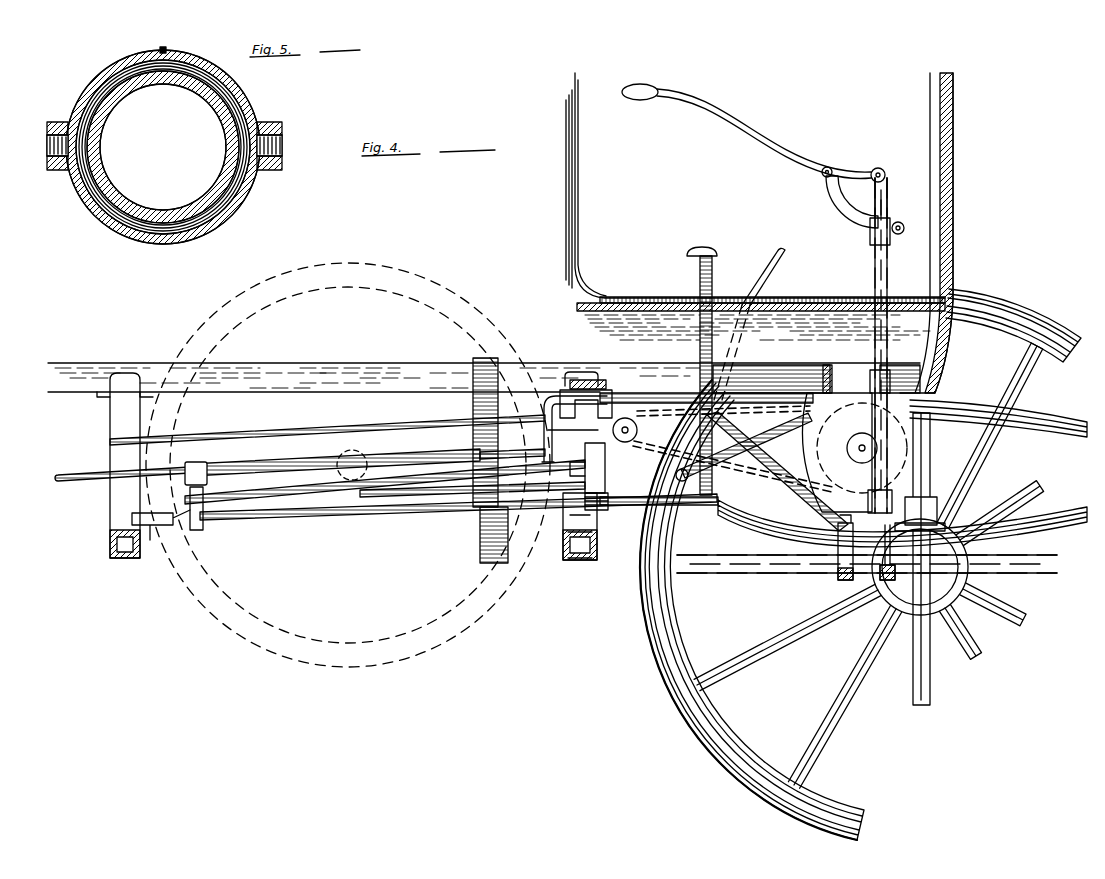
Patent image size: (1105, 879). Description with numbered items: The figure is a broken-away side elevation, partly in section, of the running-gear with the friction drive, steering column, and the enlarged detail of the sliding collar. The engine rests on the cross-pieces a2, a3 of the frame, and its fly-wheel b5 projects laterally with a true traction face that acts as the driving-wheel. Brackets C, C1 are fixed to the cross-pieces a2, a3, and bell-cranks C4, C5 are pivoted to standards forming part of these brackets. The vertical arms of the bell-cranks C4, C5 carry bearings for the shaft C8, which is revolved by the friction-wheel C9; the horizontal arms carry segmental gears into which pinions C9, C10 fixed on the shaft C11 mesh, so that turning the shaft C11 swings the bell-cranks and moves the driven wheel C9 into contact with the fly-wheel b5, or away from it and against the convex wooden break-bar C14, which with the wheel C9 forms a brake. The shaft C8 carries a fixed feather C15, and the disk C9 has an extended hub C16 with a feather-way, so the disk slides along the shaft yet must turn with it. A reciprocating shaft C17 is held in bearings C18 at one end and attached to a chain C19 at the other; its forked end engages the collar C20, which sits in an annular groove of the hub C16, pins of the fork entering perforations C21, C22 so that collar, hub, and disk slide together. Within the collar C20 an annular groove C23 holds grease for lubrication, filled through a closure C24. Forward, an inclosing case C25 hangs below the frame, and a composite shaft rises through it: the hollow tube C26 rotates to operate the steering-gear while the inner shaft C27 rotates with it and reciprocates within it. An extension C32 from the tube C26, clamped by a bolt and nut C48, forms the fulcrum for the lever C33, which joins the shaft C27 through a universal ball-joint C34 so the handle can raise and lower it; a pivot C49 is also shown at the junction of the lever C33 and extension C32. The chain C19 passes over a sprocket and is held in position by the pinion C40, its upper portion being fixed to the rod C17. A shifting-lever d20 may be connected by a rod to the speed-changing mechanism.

In FIG. 5, the collar C20 is at (240, 184).
In FIG. 5, the perforation C21 is at (47, 142).
In FIG. 5, the perforation C22 is at (283, 142).
In FIG. 5, the annular groove C23 is at (230, 92).
In FIG. 5, the closure C24 is at (165, 50).
In FIG. 4, the fly-wheel b5 is at (270, 285).
In FIG. 4, the cross-piece a2 is at (120, 558).
In FIG. 4, the cross-piece a3 is at (580, 560).
In FIG. 4, the bracket C is at (152, 540).
In FIG. 4, the bracket C1 is at (597, 520).
In FIG. 4, the bell-crank C4 is at (205, 497).
In FIG. 4, the bell-crank C5 is at (606, 466).
In FIG. 4, the shaft C8 is at (80, 481).
In FIG. 4, the friction-wheel C9 is at (200, 530).
In FIG. 4, the pinion C10 is at (606, 478).
In FIG. 4, the shaft C11 is at (328, 518).
In FIG. 4, the break-bar C14 is at (268, 436).
In FIG. 4, the feather C15 is at (325, 460).
In FIG. 4, the hub C16 is at (543, 430).
In FIG. 4, the shaft C17 is at (640, 408).
In FIG. 4, the bearings C18 is at (595, 372).
In FIG. 4, the chain C19 is at (794, 462).
In FIG. 4, the inclosing case C25 is at (902, 473).
In FIG. 4, the hollow shaft C26 is at (875, 268).
In FIG. 4, the reciprocating shaft C27 is at (888, 195).
In FIG. 4, the extension C32 is at (830, 208).
In FIG. 4, the lever C33 is at (655, 88).
In FIG. 4, the universal ball-joint C34 is at (884, 168).
In FIG. 4, the pinion C40 is at (637, 430).
In FIG. 4, the nut C48 is at (905, 227).
In FIG. 4, the pivot pin C49 is at (833, 166).
In FIG. 4, the shifting-lever d20 is at (770, 270).